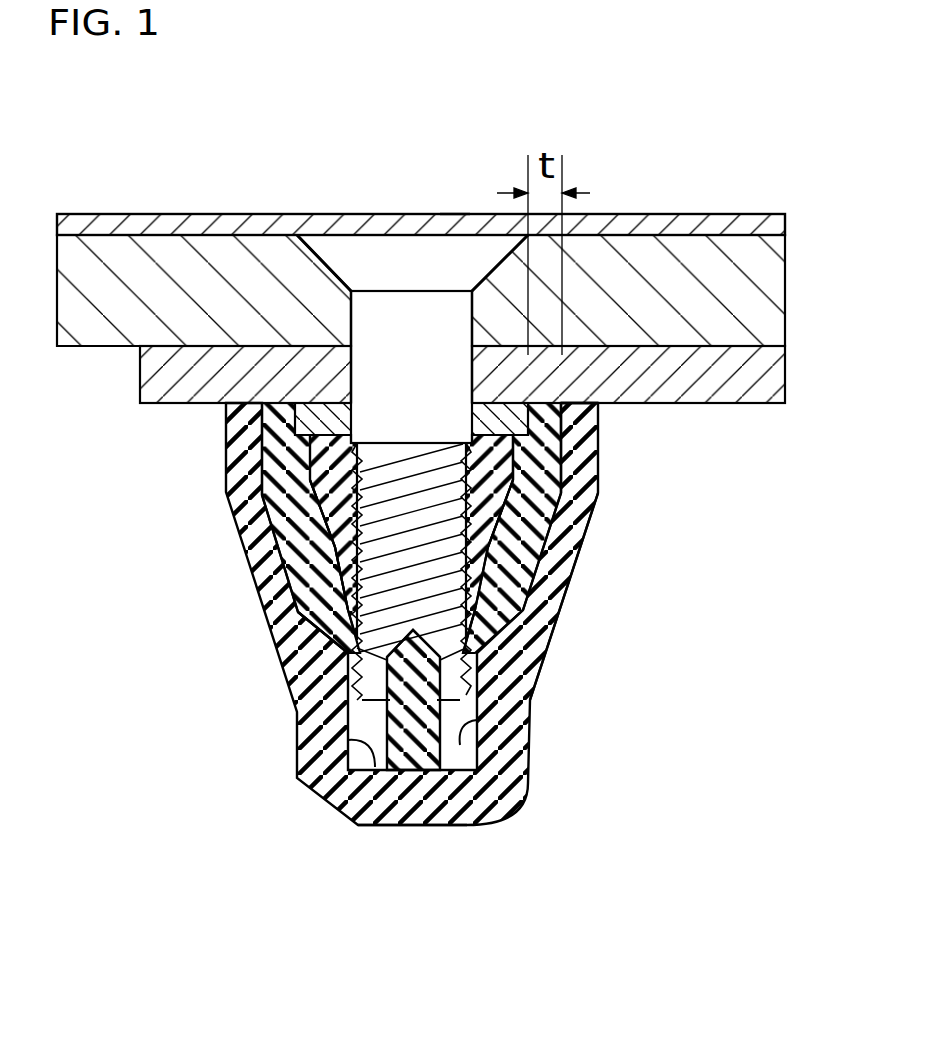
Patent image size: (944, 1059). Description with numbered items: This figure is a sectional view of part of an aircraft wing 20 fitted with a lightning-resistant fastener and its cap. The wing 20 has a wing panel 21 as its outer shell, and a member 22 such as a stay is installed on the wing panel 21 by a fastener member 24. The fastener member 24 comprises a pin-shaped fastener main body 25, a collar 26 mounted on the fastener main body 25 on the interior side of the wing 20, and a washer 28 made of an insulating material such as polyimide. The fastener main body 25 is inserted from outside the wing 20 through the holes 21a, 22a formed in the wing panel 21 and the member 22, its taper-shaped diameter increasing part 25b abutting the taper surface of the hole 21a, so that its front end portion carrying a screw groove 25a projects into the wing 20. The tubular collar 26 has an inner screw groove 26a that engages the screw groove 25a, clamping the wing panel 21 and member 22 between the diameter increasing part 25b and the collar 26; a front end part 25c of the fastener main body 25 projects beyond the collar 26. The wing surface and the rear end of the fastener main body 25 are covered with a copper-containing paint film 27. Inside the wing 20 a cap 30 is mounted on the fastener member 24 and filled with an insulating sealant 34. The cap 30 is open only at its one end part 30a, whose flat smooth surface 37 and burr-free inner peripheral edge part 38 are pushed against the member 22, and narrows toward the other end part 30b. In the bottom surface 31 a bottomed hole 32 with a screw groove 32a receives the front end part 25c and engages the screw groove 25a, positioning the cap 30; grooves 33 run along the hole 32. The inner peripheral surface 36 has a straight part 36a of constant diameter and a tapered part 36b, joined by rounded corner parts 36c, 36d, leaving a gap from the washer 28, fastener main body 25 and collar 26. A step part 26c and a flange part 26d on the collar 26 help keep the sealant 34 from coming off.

The wing 20 is at (401, 246).
The wing panel 21 is at (197, 262).
The hole 21a is at (472, 308).
The member 22 is at (240, 393).
The hole 22a is at (472, 395).
The fastener member 24 is at (456, 215).
The fastener main body 25 is at (501, 424).
The screw groove 25a is at (470, 655).
The diameter increasing part 25b is at (371, 255).
The front end part 25c is at (455, 700).
The collar 26 is at (595, 462).
The screw groove 26a is at (350, 565).
The step part 26c is at (330, 540).
The flange part 26d is at (590, 512).
The paint film 27 is at (92, 214).
The washer 28 is at (300, 430).
The cap 30 is at (298, 705).
The one end part 30a is at (598, 432).
The other end part 30b is at (488, 826).
The bottom surface 31 is at (330, 628).
The hole 32 is at (440, 760).
The screw groove 32a is at (407, 700).
The groove 33 is at (375, 765).
The sealant 34 is at (598, 526).
The inner peripheral surface 36 is at (575, 612).
The straight part 36a is at (598, 410).
The tapered part 36b is at (570, 563).
The corner part 36c is at (595, 497).
The corner part 36d is at (500, 652).
The surface 37 is at (232, 396).
The inner peripheral edge part 38 is at (280, 385).